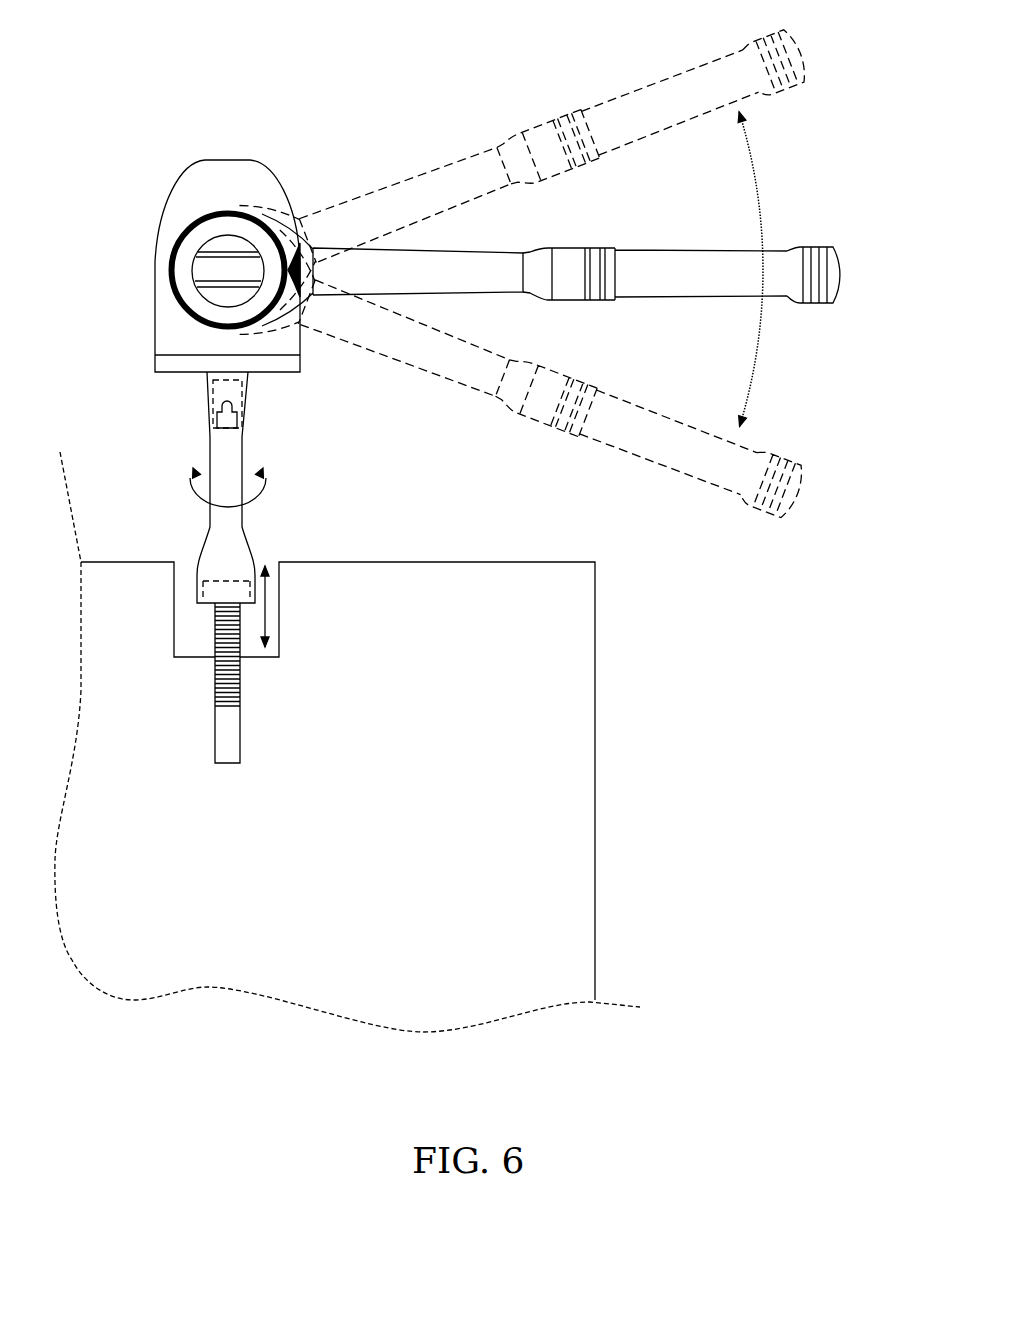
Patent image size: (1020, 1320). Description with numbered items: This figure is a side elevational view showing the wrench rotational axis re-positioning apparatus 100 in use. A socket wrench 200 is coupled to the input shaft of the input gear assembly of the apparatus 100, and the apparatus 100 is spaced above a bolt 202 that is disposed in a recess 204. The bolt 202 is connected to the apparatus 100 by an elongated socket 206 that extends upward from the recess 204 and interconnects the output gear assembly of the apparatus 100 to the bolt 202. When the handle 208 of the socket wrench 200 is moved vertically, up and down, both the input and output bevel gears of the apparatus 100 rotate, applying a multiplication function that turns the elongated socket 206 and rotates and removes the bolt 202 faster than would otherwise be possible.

The wrench rotational axis re-positioning apparatus 100 is at (303, 352).
The socket wrench 200 is at (460, 250).
The bolt 202 is at (236, 685).
The recess 204 is at (278, 572).
The elongated socket 206 is at (238, 441).
The handle 208 is at (637, 292).